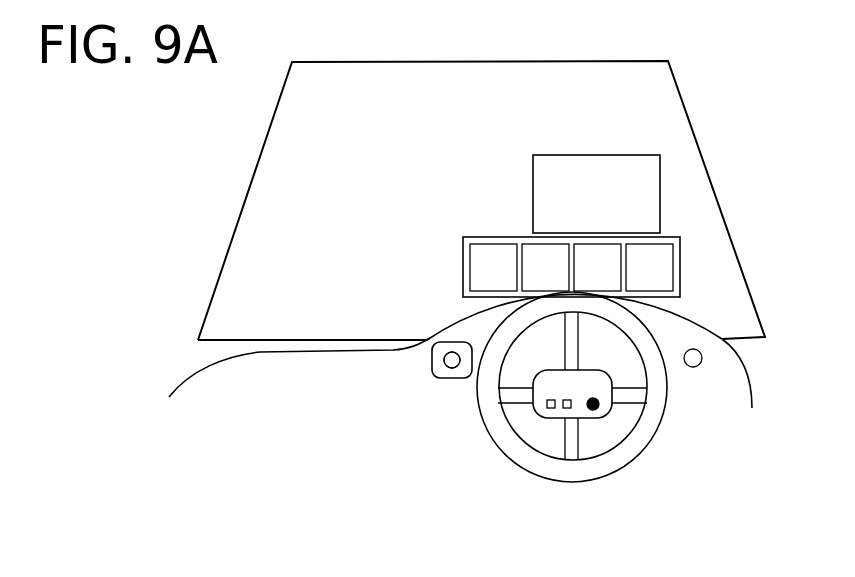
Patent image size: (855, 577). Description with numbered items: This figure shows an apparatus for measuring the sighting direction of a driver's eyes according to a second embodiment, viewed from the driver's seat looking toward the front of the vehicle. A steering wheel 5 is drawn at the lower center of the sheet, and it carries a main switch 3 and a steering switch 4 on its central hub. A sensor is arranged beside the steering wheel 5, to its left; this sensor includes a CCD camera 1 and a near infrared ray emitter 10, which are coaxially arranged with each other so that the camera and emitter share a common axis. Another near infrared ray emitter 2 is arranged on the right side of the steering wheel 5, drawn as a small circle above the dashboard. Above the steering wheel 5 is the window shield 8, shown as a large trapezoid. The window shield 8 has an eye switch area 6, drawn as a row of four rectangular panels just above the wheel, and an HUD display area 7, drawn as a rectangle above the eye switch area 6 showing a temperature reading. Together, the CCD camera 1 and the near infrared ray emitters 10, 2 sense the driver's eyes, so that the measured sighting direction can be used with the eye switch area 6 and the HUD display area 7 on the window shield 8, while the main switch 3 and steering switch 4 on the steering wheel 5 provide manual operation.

The CCD camera 1 is at (432, 360).
The near infrared ray emitter 2 is at (697, 367).
The main switch 3 is at (603, 408).
The steering switch 4 is at (528, 415).
The steering wheel 5 is at (557, 475).
The eye switch area 6 is at (680, 260).
The HUD display area 7 is at (660, 182).
The window shield 8 is at (378, 62).
The near infrared ray emitter 10 is at (453, 380).